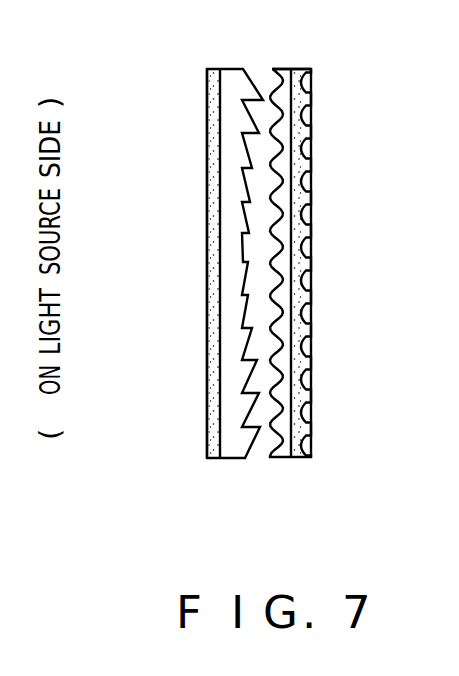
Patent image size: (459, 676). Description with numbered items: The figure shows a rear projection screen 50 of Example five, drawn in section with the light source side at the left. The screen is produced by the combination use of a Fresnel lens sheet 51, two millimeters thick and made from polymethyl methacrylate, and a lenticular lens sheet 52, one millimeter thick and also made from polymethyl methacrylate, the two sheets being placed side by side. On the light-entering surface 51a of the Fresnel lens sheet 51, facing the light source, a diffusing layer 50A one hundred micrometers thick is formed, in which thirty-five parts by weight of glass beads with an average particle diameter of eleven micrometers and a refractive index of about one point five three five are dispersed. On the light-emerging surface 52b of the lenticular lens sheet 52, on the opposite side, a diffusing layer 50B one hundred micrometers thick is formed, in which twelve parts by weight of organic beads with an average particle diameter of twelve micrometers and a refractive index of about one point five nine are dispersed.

The rear projection screen 50 is at (307, 505).
The diffusing layer 50A is at (207, 87).
The diffusing layer 50B is at (304, 69).
The Fresnel lens sheet 51 is at (187, 260).
The light-entering surface 51a is at (207, 270).
The lenticular lens sheet 52 is at (331, 260).
The light-emerging surface 52b is at (310, 220).